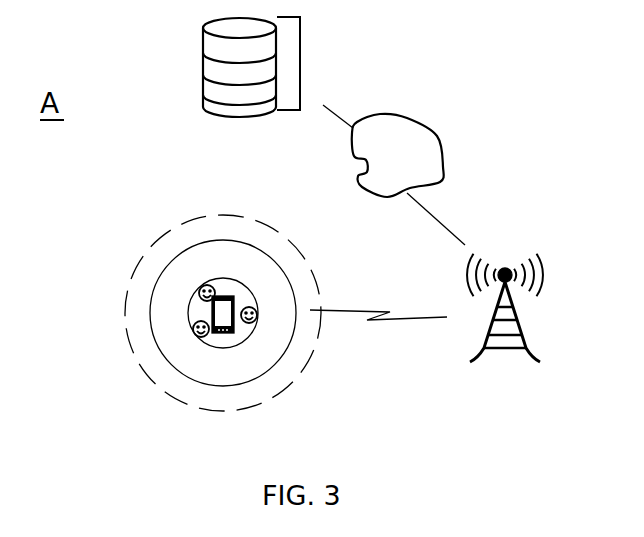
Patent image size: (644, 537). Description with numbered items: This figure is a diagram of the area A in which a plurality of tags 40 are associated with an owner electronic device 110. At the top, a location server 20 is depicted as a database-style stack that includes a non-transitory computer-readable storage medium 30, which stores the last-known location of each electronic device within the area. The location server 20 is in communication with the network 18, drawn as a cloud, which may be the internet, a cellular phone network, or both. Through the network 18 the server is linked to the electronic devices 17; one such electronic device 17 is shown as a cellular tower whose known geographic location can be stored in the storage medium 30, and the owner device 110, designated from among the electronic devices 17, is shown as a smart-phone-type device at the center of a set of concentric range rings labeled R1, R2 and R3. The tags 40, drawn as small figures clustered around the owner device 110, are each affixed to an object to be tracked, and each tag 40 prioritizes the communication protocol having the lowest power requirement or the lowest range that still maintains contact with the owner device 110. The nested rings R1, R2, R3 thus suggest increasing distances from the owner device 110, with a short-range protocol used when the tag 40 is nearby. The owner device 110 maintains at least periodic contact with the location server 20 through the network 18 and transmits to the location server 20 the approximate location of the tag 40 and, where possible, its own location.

The location server 20 is at (257, 67).
The non-transitory computer-readable storage medium 30 is at (203, 81).
The network 18 is at (420, 142).
The electronic device 17 is at (505, 265).
The owner device 110 is at (220, 345).
The tag 40 is at (204, 286).
The first radius region R1 is at (245, 340).
The second radius region R2 is at (283, 357).
The third radius region R3 is at (317, 351).